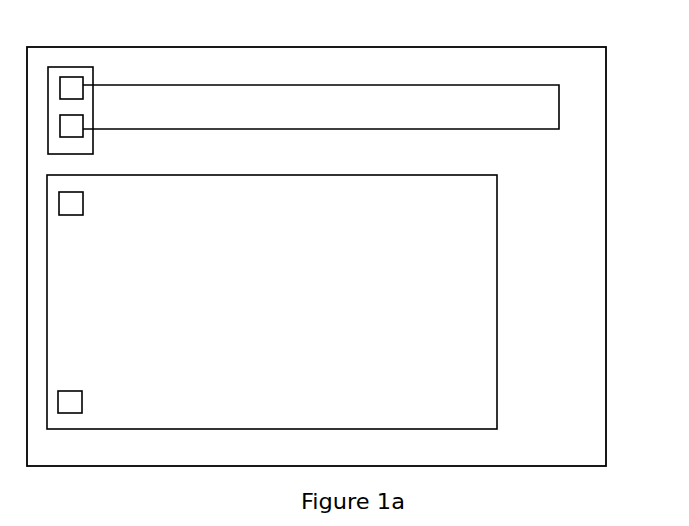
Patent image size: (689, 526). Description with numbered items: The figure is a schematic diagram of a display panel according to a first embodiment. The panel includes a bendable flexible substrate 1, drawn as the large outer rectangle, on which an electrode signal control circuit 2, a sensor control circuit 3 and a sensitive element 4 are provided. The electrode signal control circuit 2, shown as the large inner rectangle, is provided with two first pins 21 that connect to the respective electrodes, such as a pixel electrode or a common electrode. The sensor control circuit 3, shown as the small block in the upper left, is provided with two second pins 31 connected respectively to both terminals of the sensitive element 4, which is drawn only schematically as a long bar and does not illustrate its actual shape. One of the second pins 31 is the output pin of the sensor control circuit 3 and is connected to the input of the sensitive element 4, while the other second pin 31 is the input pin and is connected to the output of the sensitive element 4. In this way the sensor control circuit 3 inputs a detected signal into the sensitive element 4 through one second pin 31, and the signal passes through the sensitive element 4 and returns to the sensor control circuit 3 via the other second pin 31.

The flexible substrate 1 is at (606, 297).
The electrode signal control circuit 2 is at (497, 255).
The first pins 21 is at (82, 397).
The sensor control circuit 3 is at (72, 67).
The second pins 31 is at (82, 123).
The sensitive element 4 is at (315, 85).